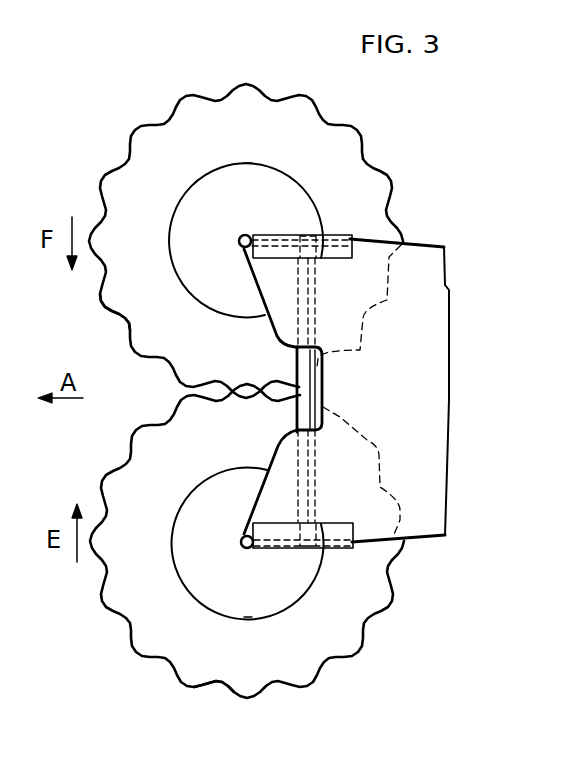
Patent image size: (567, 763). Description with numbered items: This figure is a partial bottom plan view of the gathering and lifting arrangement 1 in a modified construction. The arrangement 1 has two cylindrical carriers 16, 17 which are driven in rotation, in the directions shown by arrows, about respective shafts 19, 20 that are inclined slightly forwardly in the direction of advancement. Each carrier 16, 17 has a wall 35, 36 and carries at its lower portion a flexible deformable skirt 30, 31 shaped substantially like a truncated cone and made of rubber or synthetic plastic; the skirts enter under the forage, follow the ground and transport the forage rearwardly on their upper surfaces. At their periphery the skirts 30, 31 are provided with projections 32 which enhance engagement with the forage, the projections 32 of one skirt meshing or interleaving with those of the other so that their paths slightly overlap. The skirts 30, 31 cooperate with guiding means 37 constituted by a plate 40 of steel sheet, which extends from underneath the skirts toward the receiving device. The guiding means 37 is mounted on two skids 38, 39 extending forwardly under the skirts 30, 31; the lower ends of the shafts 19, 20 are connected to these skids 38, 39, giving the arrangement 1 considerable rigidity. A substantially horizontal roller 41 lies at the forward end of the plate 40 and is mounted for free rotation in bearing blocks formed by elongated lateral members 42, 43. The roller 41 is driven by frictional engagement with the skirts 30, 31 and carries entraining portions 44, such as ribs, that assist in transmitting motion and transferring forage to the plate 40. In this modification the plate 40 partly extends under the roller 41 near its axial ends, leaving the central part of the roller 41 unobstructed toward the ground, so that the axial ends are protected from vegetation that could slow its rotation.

The gathering and lifting arrangement 1 is at (126, 126).
The cylindrical carrier 16 is at (217, 600).
The cylindrical carrier 17 is at (195, 215).
The shaft 19 is at (240, 546).
The shaft 20 is at (240, 233).
The flexible deformable skirt 30 is at (198, 647).
The flexible deformable skirt 31 is at (132, 285).
The projections 32 is at (140, 342).
The wall 35 is at (248, 618).
The wall 36 is at (248, 163).
The guiding means 37 is at (456, 285).
The skid 38 is at (328, 543).
The skid 39 is at (331, 233).
The plate 40 is at (411, 342).
The roller 41 is at (322, 375).
The elongated lateral member 42 is at (430, 538).
The elongated lateral member 43 is at (424, 243).
The entraining portions 44 is at (310, 395).